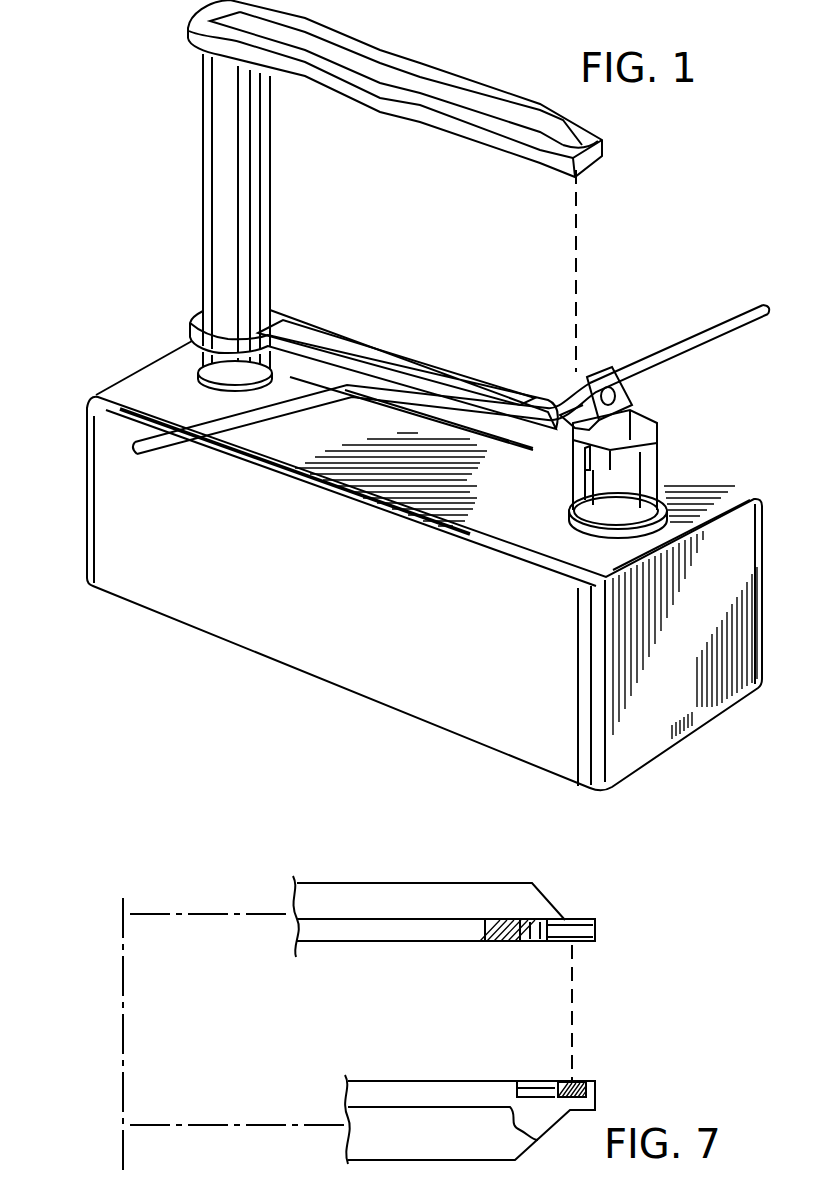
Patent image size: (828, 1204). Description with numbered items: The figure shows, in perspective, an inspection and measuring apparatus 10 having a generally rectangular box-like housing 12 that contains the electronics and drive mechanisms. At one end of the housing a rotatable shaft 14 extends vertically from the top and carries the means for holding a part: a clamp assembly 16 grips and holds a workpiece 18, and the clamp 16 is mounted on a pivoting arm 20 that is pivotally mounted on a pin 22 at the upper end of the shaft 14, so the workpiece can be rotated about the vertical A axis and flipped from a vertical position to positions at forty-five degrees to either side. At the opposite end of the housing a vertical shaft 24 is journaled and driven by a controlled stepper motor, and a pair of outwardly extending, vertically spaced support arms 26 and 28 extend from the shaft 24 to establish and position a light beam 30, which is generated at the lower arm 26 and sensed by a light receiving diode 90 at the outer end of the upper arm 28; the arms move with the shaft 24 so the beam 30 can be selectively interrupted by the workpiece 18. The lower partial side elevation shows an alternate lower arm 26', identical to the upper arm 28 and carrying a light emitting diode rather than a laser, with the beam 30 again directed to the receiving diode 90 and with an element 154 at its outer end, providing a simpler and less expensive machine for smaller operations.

In FIG. 1, the inspection and measuring apparatus 10 is at (168, 126).
In FIG. 1, the housing 12 is at (114, 462).
In FIG. 1, the rotatable shaft 14 is at (637, 473).
In FIG. 1, the clamp assembly 16 is at (618, 364).
In FIG. 1, the workpiece 18 is at (737, 320).
In FIG. 1, the pivoting arm 20 is at (632, 414).
In FIG. 1, the pin 22 is at (648, 429).
In FIG. 1, the vertical shaft 24 is at (207, 232).
In FIG. 1, the lower support arm 26 is at (374, 369).
In FIG. 7, the lower arm (alternate embodiment) 26' is at (470, 1102).
In FIG. 1, the upper support arm 28 is at (413, 63).
In FIG. 7, the upper support arm 28 is at (412, 884).
In FIG. 1, the light beam 30 is at (578, 264).
In FIG. 7, the light beam 30 is at (572, 985).
In FIG. 7, the light receiving diode 90 is at (565, 918).
In FIG. 7, the target insert 154 is at (568, 1080).